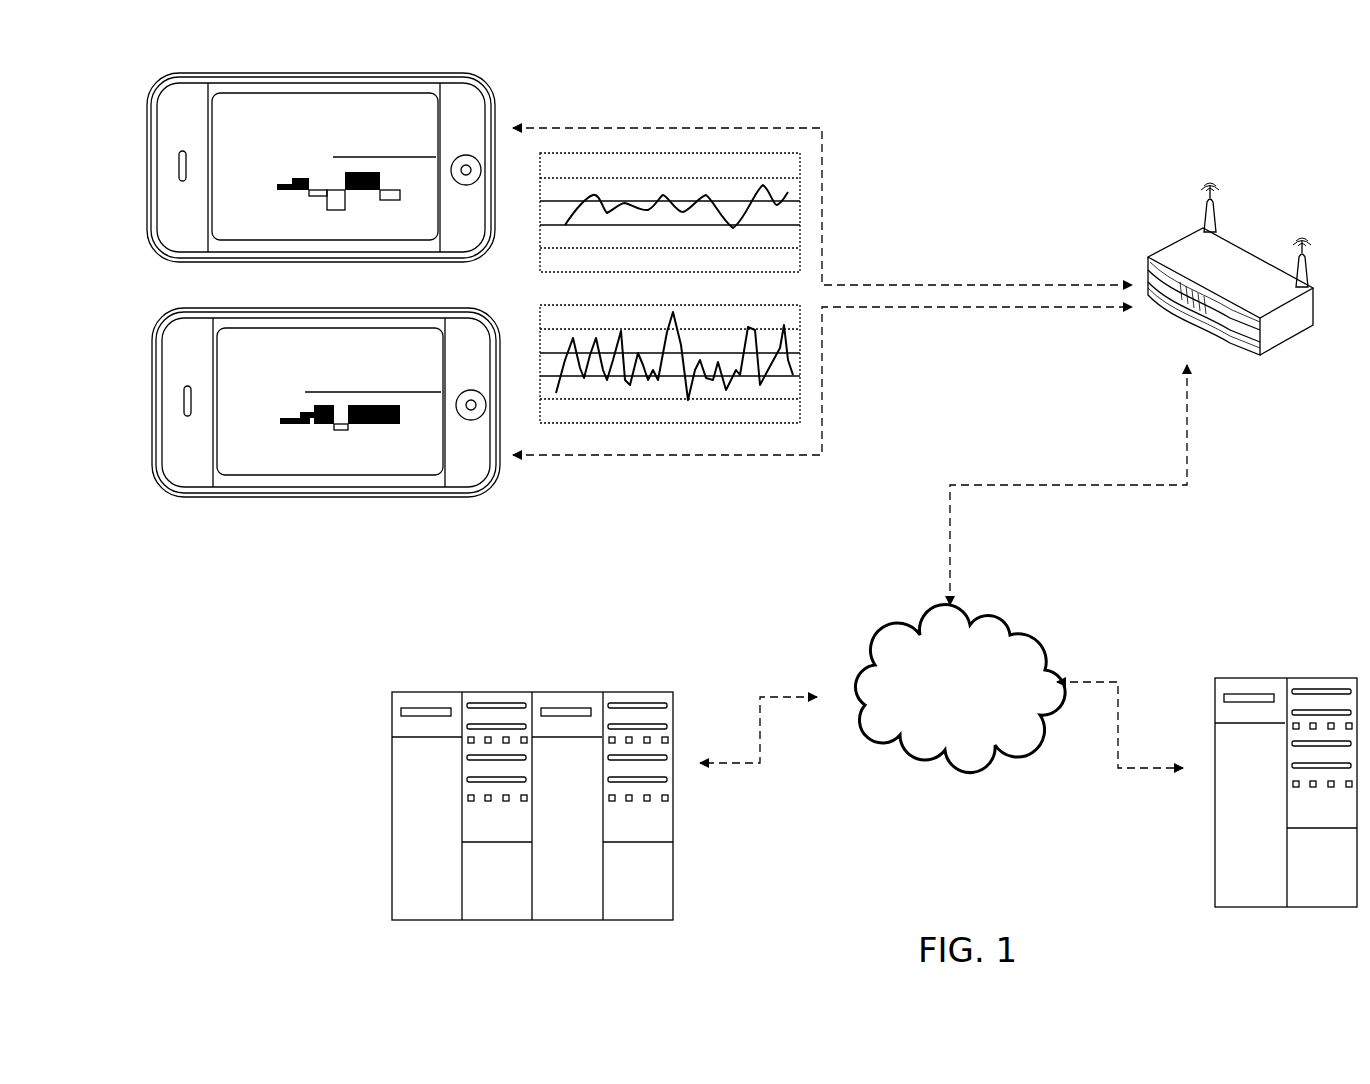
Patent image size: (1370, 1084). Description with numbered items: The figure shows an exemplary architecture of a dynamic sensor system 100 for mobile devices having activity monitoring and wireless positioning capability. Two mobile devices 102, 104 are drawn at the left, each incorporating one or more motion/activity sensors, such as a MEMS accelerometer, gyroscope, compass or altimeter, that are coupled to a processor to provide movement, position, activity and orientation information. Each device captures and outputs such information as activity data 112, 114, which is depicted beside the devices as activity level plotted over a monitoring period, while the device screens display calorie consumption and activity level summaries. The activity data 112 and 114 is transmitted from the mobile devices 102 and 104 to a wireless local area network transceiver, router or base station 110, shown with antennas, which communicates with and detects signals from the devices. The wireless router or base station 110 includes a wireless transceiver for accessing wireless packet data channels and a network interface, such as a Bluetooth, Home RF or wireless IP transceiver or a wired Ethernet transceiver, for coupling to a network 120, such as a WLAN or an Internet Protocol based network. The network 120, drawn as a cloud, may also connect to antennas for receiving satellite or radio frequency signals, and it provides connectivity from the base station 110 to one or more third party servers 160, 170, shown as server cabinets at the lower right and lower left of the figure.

The dynamic sensor system 100 is at (1125, 97).
The mobile device 102 is at (484, 235).
The mobile device 104 is at (485, 470).
The wireless router or base station 110 is at (1276, 296).
The activity data 112 is at (794, 268).
The activity data 114 is at (794, 419).
The network 120 is at (965, 719).
The third party server 160 is at (1351, 896).
The third party server 170 is at (665, 911).